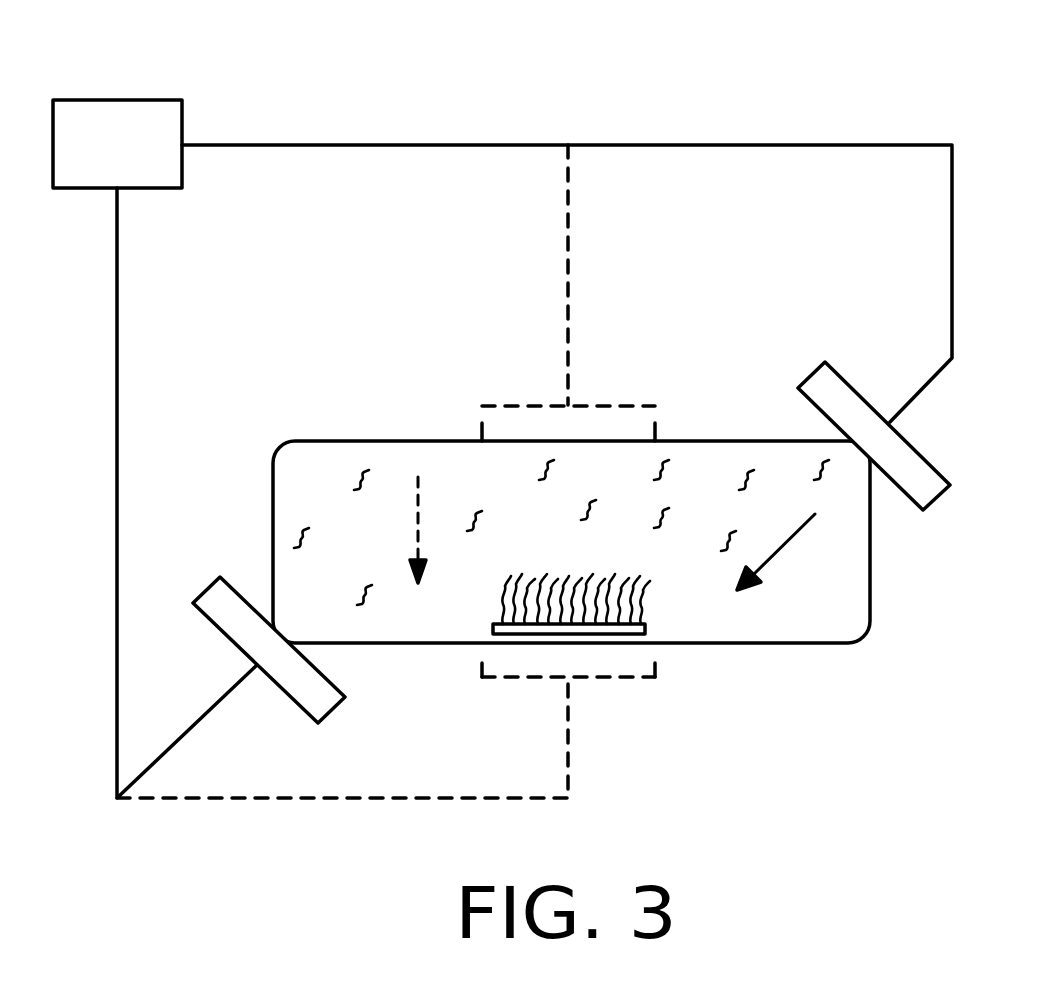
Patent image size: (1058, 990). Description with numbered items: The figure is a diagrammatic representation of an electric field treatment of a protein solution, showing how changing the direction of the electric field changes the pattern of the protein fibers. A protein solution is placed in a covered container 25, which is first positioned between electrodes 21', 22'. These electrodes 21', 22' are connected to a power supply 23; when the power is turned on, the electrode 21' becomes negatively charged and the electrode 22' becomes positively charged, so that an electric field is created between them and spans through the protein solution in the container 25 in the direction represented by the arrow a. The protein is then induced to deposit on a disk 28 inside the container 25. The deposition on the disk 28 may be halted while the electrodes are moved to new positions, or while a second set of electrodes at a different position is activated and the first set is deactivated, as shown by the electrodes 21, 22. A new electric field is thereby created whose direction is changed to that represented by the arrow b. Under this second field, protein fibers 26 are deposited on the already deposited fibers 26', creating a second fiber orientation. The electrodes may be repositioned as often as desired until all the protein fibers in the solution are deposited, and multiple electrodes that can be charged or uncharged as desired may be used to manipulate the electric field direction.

The power supply 23 is at (108, 118).
The electrode 22 is at (874, 405).
The electrode 22' is at (568, 377).
The electrode 21 is at (306, 679).
The electrode 21' is at (568, 718).
The covered container 25 is at (705, 441).
The protein fibers 26 is at (522, 560).
The already deposited fibers 26' is at (620, 650).
The disk 28 is at (493, 630).
The arrow a is at (415, 500).
The arrow b is at (795, 535).